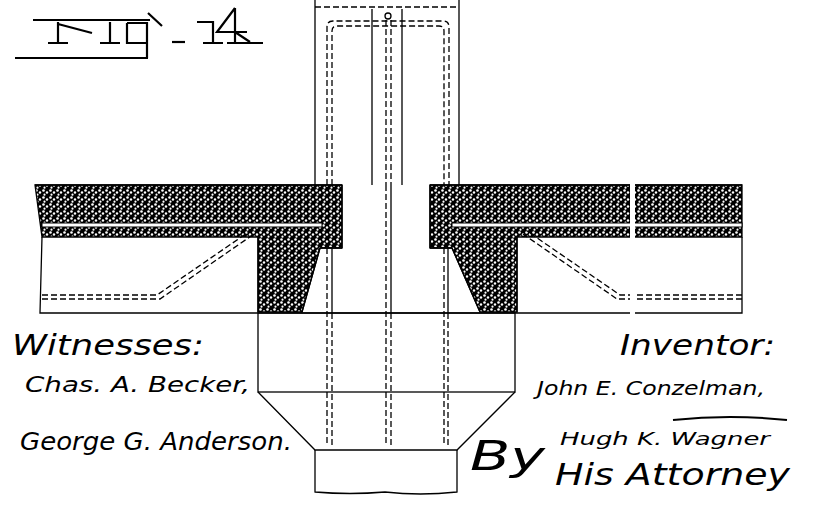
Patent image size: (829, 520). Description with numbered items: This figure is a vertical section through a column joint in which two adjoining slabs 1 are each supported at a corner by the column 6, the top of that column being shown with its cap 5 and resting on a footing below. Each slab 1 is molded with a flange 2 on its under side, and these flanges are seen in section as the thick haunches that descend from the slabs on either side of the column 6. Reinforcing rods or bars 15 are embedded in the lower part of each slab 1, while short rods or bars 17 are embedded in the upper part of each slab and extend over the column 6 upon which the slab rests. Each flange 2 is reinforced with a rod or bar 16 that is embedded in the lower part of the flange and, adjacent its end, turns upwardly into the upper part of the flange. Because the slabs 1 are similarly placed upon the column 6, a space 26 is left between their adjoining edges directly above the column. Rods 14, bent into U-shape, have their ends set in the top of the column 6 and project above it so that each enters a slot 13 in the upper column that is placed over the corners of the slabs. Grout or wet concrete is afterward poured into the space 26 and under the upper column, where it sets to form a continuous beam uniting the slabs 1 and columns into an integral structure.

The slab 1 is at (157, 185).
The flange 2 is at (258, 284).
The cap 5 is at (386, 352).
The column 6 is at (325, 474).
The slot 13 is at (403, 80).
The rod 14 is at (388, 285).
The reinforcing rods or bars 15 is at (207, 227).
The rod or bar 16 is at (100, 294).
The short rods or bars 17 is at (227, 185).
The space 26 is at (386, 216).